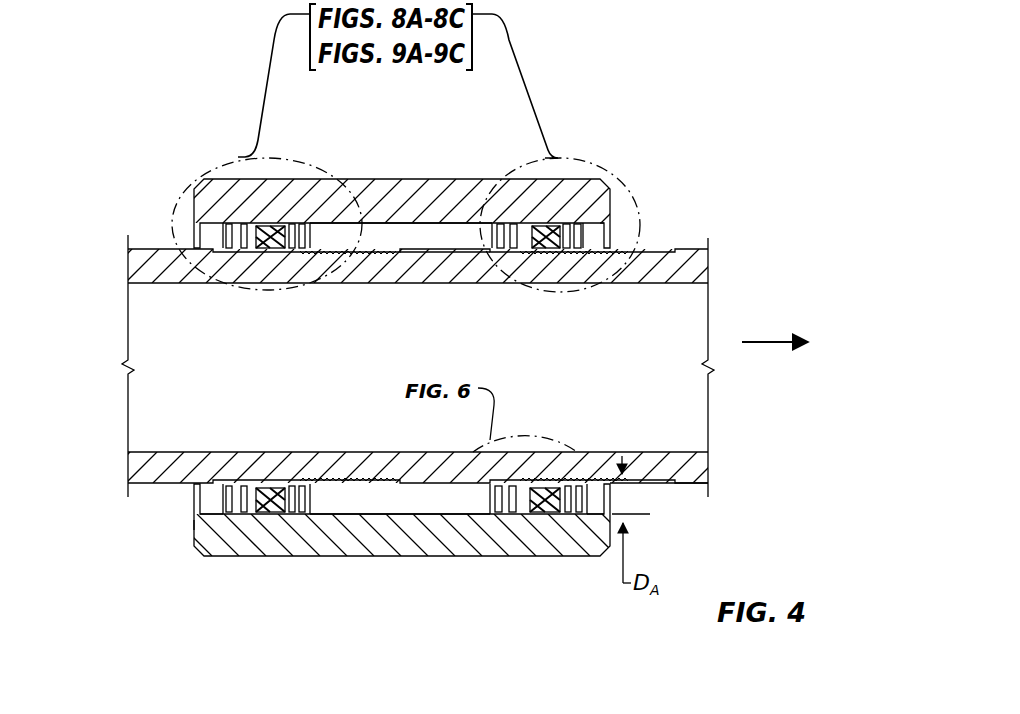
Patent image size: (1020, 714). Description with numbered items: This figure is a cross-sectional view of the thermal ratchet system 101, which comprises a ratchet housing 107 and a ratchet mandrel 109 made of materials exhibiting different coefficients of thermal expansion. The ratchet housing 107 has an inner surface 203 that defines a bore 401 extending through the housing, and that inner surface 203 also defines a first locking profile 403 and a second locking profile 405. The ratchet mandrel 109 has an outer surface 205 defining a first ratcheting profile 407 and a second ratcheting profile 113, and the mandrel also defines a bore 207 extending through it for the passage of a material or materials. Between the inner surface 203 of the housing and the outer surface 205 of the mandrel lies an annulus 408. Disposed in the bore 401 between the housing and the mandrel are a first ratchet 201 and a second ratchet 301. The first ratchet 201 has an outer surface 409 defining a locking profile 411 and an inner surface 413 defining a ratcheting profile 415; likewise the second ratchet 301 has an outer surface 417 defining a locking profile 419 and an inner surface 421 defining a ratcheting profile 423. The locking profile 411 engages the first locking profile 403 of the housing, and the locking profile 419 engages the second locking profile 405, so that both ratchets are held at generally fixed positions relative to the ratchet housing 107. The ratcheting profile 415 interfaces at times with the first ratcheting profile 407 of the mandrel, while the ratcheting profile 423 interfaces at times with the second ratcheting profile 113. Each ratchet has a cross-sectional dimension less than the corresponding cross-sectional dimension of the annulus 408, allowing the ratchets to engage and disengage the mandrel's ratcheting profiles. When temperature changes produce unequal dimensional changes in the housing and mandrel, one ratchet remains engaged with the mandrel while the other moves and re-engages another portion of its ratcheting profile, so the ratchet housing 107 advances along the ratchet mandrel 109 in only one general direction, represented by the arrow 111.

The thermal ratchet system 101 is at (752, 210).
The ratchet housing 107 is at (178, 541).
The ratchet mandrel 109 is at (150, 243).
The arrow 111 is at (760, 341).
The second ratcheting profile 113 is at (633, 486).
The first ratchet 201 is at (236, 493).
The inner surface 203 is at (420, 230).
The outer surface 205 is at (680, 484).
The bore 207 is at (170, 335).
The second ratchet 301 is at (508, 493).
The bore 401 is at (355, 513).
The first locking profile 403 is at (212, 237).
The second locking profile 405 is at (633, 240).
The first ratcheting profile 407 is at (345, 516).
The annulus 408 is at (385, 236).
The outer surface 409 is at (277, 232).
The locking profile 411 is at (267, 493).
The inner surface 413 is at (282, 249).
The ratcheting profile 415 is at (283, 490).
The outer surface 417 is at (547, 232).
The locking profile 419 is at (556, 500).
The inner surface 421 is at (548, 249).
The ratcheting profile 423 is at (553, 486).